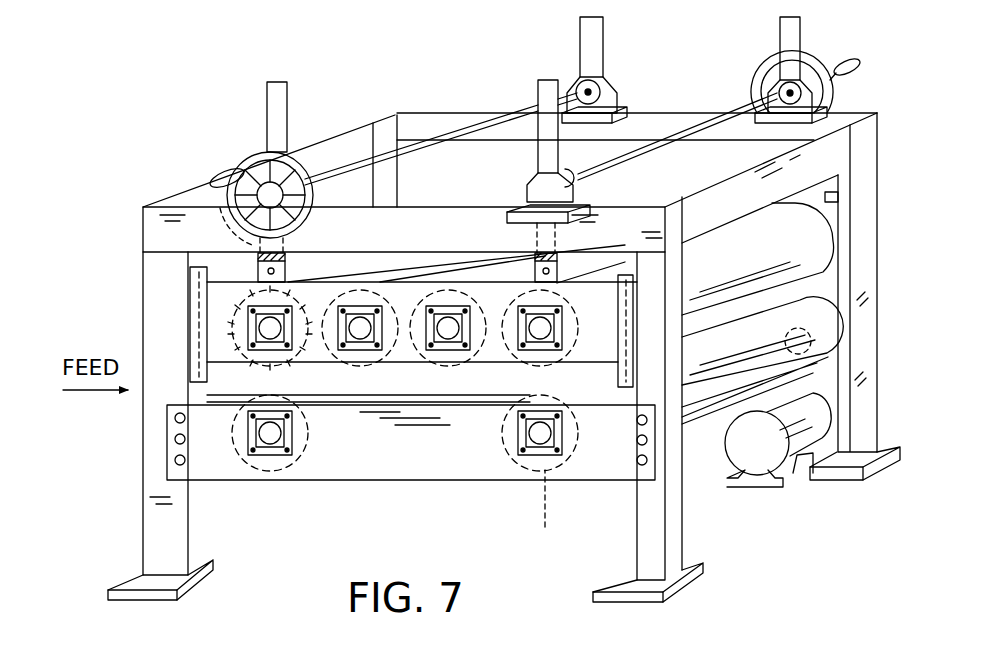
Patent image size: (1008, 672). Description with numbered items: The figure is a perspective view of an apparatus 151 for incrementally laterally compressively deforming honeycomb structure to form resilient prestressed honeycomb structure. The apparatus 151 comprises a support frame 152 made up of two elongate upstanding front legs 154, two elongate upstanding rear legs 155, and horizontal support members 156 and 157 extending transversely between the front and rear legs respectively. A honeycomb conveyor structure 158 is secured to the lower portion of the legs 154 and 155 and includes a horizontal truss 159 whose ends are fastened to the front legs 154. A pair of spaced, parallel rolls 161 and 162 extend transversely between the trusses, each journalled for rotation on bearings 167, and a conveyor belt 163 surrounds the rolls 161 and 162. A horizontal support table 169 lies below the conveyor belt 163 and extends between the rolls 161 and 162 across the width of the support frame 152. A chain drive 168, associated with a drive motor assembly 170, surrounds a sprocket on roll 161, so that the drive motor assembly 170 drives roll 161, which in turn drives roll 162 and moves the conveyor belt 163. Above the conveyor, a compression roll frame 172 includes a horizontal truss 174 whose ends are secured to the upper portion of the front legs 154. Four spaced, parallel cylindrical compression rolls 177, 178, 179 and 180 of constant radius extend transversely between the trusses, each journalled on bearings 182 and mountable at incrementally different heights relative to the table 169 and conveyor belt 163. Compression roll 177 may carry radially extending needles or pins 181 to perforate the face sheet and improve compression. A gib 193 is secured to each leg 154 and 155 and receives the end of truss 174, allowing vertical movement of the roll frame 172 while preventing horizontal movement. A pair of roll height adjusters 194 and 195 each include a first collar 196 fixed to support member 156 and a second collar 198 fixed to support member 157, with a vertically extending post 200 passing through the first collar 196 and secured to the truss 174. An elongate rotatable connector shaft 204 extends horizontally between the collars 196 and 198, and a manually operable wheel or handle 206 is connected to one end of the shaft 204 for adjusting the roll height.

The apparatus 151 is at (337, 110).
The support frame 152 is at (160, 410).
The front legs 154 is at (168, 297).
The rear legs 155 is at (860, 413).
The horizontal support member 156 is at (487, 220).
The horizontal support member 157 is at (655, 121).
The honeycomb conveyor structure 158 is at (453, 456).
The horizontal truss 159 is at (387, 462).
The roll 161 is at (555, 512).
The roll 162 is at (262, 468).
The conveyor belt 163 is at (835, 300).
The bearings 167 is at (287, 437).
The chain drive 168 is at (848, 340).
The horizontal support table 169 is at (530, 368).
The drive motor assembly 170 is at (792, 484).
The compression roll frame 172 is at (606, 324).
The horizontal truss 174 is at (600, 348).
The compression roll 177 is at (260, 372).
The compression roll 178 is at (347, 402).
The compression roll 179 is at (455, 366).
The compression roll 180 is at (508, 404).
The needles or pins 181 is at (382, 270).
The bearings 182 is at (520, 316).
The gib 193 is at (197, 280).
The roll height adjuster 194 is at (740, 104).
The roll height adjuster 195 is at (368, 114).
The first collar 196 is at (283, 130).
The second collar 198 is at (580, 57).
The first vertically extending post 200 is at (210, 197).
The connector shaft 204 is at (505, 112).
The wheel or handle 206 is at (255, 155).